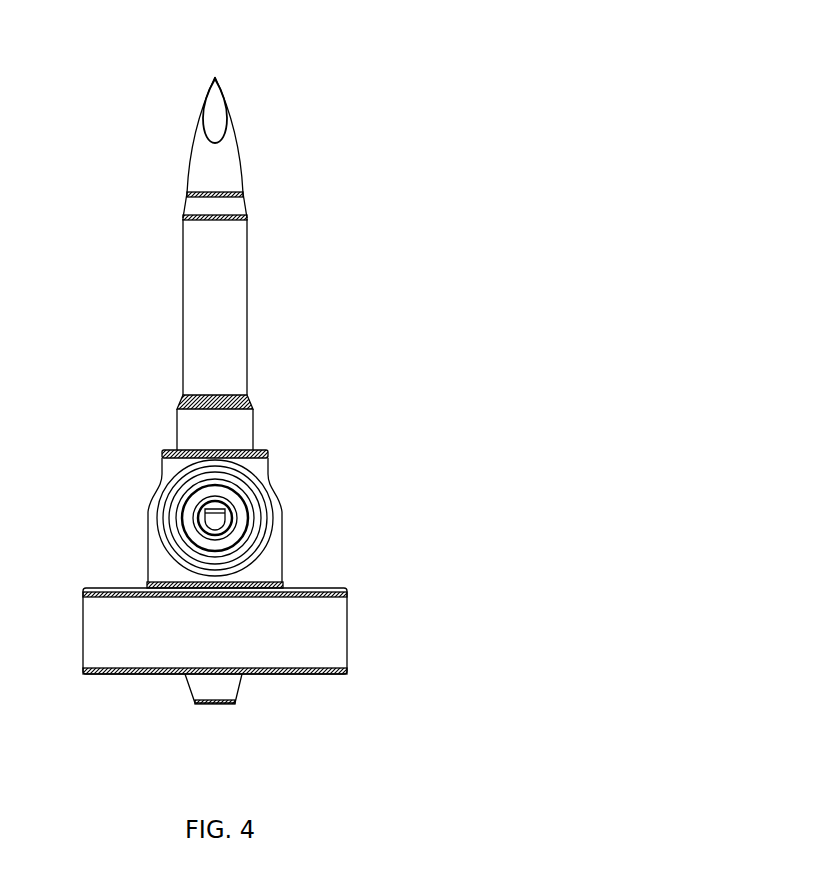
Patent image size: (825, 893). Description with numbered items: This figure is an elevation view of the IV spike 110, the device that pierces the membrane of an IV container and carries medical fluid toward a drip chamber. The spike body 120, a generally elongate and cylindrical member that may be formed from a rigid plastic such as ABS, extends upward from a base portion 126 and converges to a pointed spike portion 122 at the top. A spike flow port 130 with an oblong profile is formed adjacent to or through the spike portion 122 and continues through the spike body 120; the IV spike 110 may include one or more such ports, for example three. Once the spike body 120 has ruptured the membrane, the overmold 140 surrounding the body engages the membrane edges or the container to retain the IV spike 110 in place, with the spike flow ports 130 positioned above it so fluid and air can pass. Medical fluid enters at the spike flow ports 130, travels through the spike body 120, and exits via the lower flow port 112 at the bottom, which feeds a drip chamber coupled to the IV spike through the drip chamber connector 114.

The IV spike 110 is at (590, 126).
The lower flow port 112 is at (213, 700).
The drip chamber connector 114 is at (315, 668).
The spike body 120 is at (219, 207).
The spike portion 122 is at (216, 167).
The base portion 126 is at (247, 423).
The spike flow ports 130 is at (213, 102).
The overmold 140 is at (226, 283).